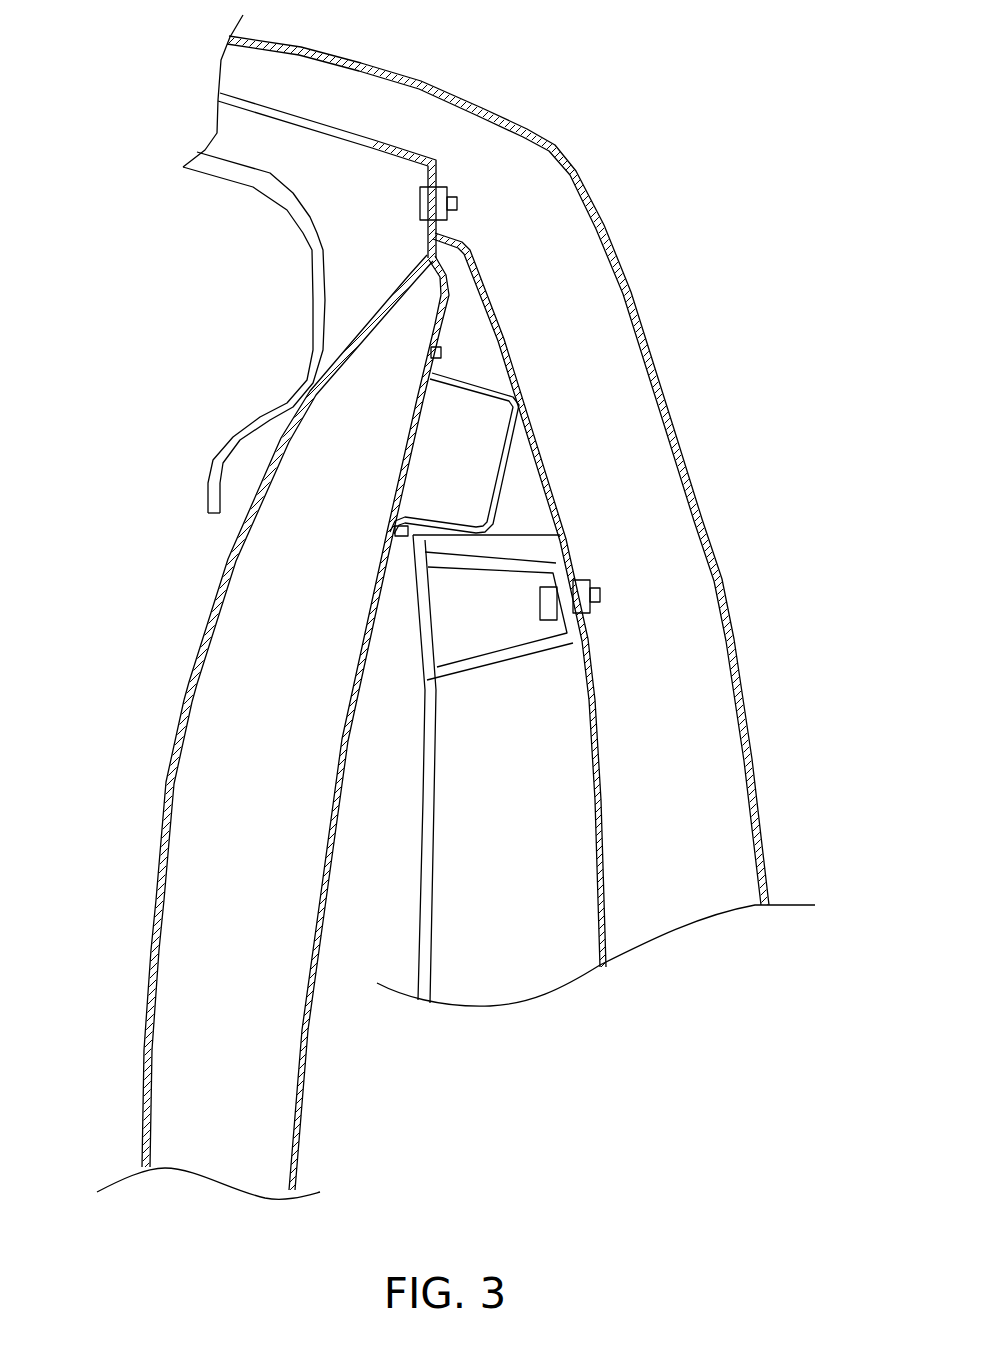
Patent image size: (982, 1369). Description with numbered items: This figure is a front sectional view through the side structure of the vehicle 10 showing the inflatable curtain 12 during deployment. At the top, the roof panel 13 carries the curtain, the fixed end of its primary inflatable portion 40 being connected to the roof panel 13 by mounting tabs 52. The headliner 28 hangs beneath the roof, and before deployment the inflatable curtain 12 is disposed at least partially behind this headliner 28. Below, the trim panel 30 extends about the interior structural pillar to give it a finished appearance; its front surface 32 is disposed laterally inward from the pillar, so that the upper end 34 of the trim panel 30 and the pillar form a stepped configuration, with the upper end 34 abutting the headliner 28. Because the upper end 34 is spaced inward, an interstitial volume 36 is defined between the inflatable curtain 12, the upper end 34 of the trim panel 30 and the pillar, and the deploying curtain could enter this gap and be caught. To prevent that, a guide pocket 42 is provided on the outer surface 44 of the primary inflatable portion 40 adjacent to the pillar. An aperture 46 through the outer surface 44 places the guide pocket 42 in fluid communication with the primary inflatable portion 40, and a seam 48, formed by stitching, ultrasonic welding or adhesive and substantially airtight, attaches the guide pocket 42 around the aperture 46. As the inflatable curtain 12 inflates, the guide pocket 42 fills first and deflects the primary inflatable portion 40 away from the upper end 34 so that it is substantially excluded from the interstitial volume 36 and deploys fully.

The vehicle 10 is at (665, 82).
The inflatable curtain 12 is at (180, 692).
The roof panel 13 is at (380, 150).
The headliner 28 is at (227, 470).
The trim panel 30 is at (388, 853).
The front surface 32 is at (417, 947).
The upper end 34 is at (400, 536).
The interstitial volume 36 is at (522, 497).
The primary inflatable portion 40 is at (172, 803).
The guide pocket 42 is at (519, 438).
The outer surface 44 is at (347, 780).
The aperture 46 is at (403, 462).
The seam 48 is at (447, 357).
The mounting tabs 52 is at (452, 172).